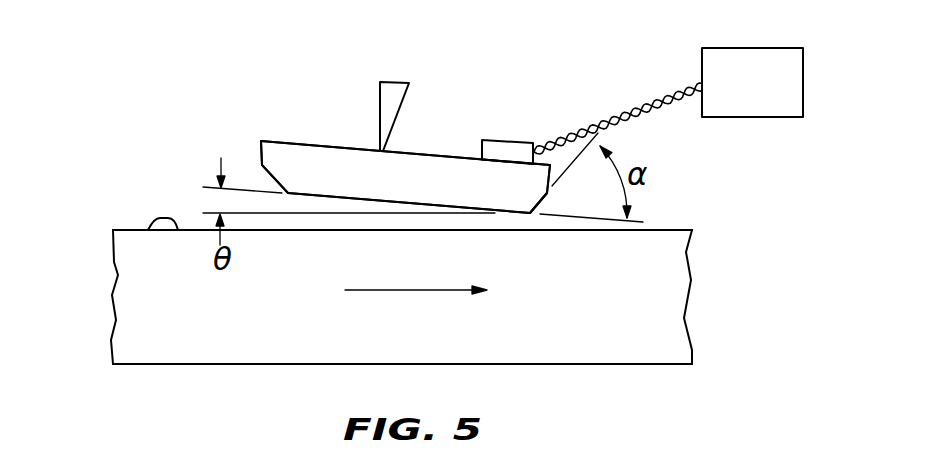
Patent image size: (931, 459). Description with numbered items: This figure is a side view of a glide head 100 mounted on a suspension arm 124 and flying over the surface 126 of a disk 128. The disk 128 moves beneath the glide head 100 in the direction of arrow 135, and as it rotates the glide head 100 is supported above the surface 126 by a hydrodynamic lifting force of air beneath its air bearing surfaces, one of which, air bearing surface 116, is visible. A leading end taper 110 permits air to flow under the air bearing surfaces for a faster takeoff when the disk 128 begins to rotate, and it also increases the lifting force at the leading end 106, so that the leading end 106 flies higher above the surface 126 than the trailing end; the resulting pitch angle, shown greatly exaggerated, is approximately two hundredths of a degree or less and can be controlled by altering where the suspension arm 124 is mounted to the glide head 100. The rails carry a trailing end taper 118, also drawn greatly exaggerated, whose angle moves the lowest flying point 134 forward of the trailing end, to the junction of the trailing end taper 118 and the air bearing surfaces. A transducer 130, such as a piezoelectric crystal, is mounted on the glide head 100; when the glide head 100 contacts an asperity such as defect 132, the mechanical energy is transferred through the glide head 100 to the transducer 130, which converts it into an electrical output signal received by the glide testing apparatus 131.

The glide head 100 is at (604, 80).
The leading end 106 is at (259, 144).
The leading end taper 110 is at (262, 170).
The air bearing surface 116 is at (338, 199).
The trailing end taper 118 is at (538, 195).
The suspension arm 124 is at (377, 110).
The surface 126 is at (677, 228).
The disk 128 is at (200, 341).
The transducer 130 is at (508, 140).
The glide testing apparatus 131 is at (773, 98).
The defect 132 is at (152, 224).
The lowest flying point 134 is at (530, 218).
The arrow 135 is at (417, 292).